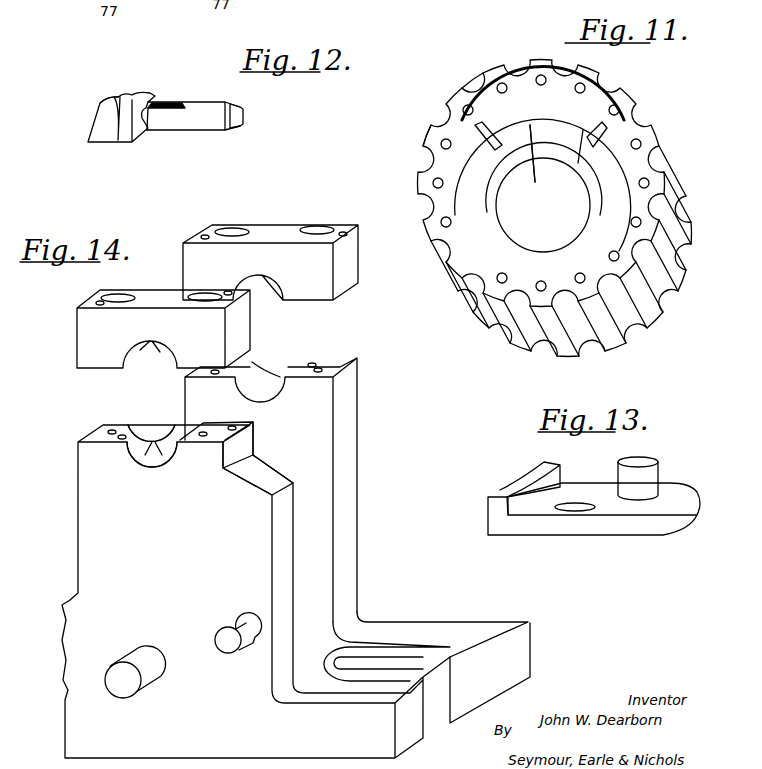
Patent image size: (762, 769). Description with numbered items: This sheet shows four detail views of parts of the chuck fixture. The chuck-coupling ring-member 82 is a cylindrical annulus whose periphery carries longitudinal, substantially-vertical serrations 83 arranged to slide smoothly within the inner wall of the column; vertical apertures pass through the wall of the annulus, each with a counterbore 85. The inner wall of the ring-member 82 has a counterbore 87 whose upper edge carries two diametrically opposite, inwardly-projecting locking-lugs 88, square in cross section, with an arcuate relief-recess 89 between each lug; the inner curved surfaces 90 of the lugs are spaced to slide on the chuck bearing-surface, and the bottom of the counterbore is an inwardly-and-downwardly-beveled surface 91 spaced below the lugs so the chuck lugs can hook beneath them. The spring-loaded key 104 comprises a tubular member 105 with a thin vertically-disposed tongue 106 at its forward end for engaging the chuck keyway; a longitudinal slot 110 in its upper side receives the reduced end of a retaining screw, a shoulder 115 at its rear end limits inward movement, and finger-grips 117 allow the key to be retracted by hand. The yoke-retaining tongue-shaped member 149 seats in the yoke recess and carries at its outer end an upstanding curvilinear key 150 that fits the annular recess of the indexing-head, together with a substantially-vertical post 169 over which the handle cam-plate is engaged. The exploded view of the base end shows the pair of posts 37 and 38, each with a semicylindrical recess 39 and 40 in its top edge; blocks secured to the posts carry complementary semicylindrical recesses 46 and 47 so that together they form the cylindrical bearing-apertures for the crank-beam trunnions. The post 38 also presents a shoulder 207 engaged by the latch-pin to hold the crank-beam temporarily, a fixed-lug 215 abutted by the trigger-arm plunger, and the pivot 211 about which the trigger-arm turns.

In FIG. 11, the chuck-coupling ring-member 82 is at (520, 98).
In FIG. 11, the serrations 83 is at (464, 96).
In FIG. 11, the counterbore 85 is at (462, 111).
In FIG. 11, the counterbore 87 is at (428, 155).
In FIG. 11, the locking-lugs 88 is at (600, 232).
In FIG. 11, the arcuate relief-recess 89 is at (650, 182).
In FIG. 11, the inner curved surfaces 90 is at (525, 243).
In FIG. 11, the inwardly-and-downwardly-beveled surface 91 is at (522, 190).
In FIG. 12, the spring-loaded key 104 is at (140, 133).
In FIG. 12, the tubular member 105 is at (208, 130).
In FIG. 12, the tongue 106 is at (244, 118).
In FIG. 12, the longitudinal slot 110 is at (177, 102).
In FIG. 12, the shoulder 115 is at (138, 142).
In FIG. 12, the finger-grips 117 is at (103, 90).
In FIG. 14, the post 37 is at (360, 472).
In FIG. 14, the post 38 is at (78, 489).
In FIG. 14, the semicylindrical recess 39 is at (262, 378).
In FIG. 14, the semicylindrical recess 40 is at (152, 448).
In FIG. 14, the semicylindrical recess 46 is at (262, 280).
In FIG. 14, the semicylindrical recess 47 is at (152, 350).
In FIG. 14, the shoulder 207 is at (272, 478).
In FIG. 14, the pivot 211 is at (140, 697).
In FIG. 14, the fixed-lug 215 is at (226, 660).
In FIG. 13, the tongue-shaped member 149 is at (596, 525).
In FIG. 13, the upstanding curvilinear key 150 is at (498, 500).
In FIG. 13, the post 169 is at (660, 472).